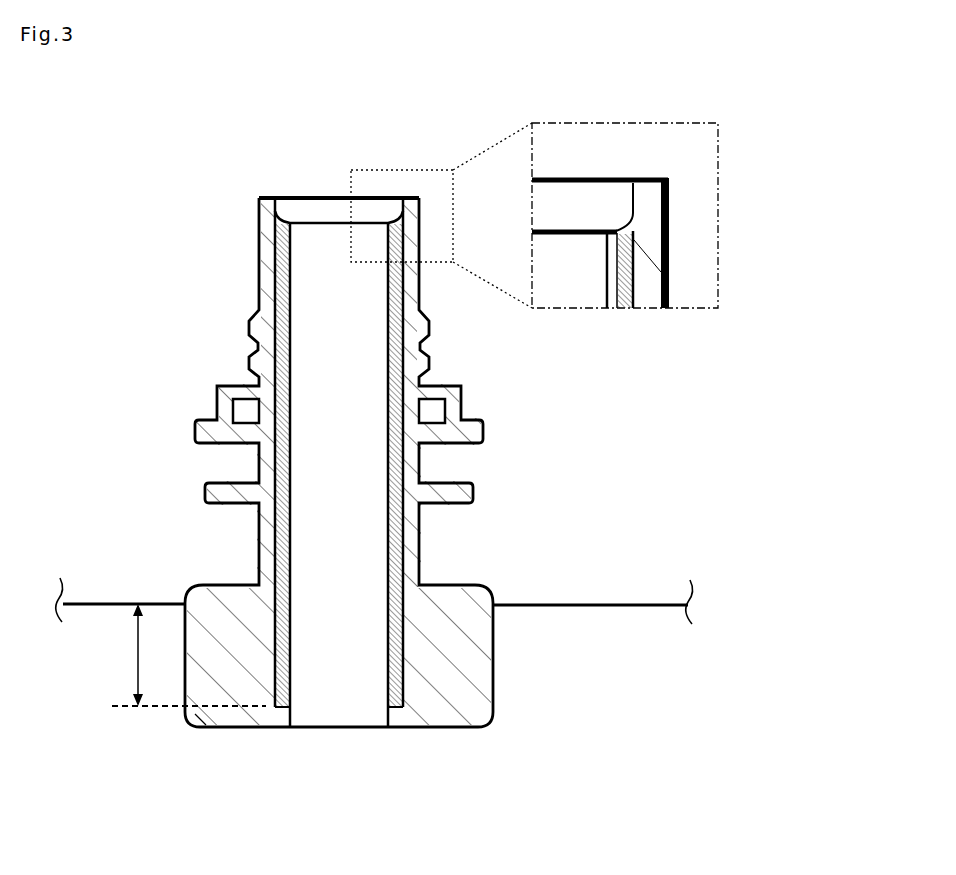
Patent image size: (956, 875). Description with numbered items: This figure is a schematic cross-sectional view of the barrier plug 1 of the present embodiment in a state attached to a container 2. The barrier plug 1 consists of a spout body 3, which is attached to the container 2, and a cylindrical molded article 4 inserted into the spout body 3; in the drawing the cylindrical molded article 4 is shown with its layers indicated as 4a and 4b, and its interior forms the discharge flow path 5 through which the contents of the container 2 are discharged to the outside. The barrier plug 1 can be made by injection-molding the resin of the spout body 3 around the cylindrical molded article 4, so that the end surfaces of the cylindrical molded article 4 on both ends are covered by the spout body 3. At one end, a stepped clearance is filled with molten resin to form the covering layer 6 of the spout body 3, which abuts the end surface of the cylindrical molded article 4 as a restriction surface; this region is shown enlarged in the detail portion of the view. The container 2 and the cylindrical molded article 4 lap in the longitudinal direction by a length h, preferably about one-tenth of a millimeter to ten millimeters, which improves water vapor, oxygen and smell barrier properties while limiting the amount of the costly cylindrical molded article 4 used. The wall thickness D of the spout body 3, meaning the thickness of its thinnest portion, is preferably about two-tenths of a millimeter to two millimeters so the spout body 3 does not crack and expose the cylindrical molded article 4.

The barrier plug 1 is at (125, 228).
The container 2 is at (584, 605).
The spout body 3 is at (224, 583).
The cylindrical molded article 4 is at (348, 778).
The tube portion 4a is at (386, 714).
The inner bore wall portion 4b is at (428, 718).
The discharge flow path 5 is at (320, 712).
The covering layer 6 is at (622, 216).
The wall thickness D is at (258, 290).
The length of the lap h is at (189, 655).